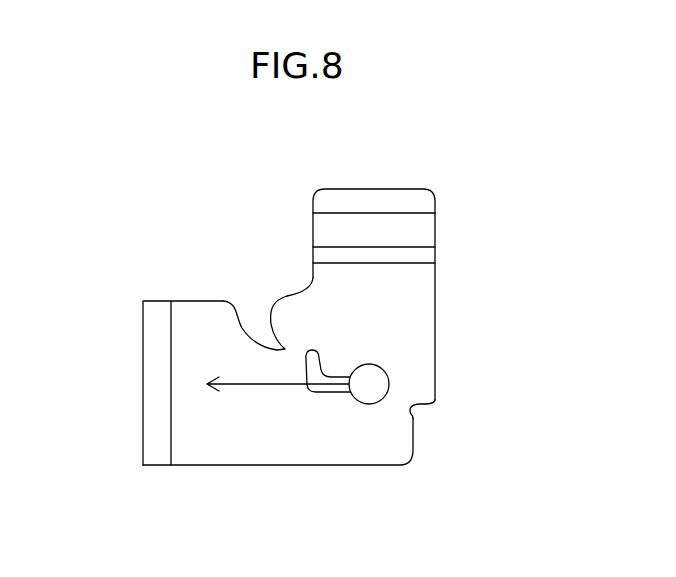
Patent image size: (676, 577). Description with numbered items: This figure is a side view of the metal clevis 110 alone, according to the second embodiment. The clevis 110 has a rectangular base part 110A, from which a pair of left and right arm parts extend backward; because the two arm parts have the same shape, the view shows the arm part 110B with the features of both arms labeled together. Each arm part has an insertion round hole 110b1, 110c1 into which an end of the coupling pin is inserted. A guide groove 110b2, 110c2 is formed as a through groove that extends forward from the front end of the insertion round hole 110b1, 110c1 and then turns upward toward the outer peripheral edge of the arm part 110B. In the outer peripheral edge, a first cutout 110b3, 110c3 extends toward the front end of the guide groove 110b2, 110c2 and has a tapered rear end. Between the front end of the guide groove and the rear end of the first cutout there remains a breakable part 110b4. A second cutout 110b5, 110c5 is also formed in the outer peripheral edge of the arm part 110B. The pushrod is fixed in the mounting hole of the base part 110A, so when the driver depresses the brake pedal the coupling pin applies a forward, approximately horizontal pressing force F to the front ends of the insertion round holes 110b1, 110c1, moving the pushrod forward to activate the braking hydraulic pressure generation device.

The clevis 110 is at (191, 236).
The base part 110A is at (143, 428).
The arm part 110B is at (240, 455).
The insertion round hole 110b1 is at (368, 405).
The insertion round hole 110c1 is at (369, 384).
The guide groove 110b2 is at (337, 375).
The guide groove 110c2 is at (328, 371).
The first cutout 110b3 is at (265, 346).
The first cutout 110c3 is at (255, 323).
The breakable part 110b4 is at (297, 348).
The second cutout 110b5 is at (418, 405).
The second cutout 110c5 is at (422, 409).
The pressing force F is at (230, 384).